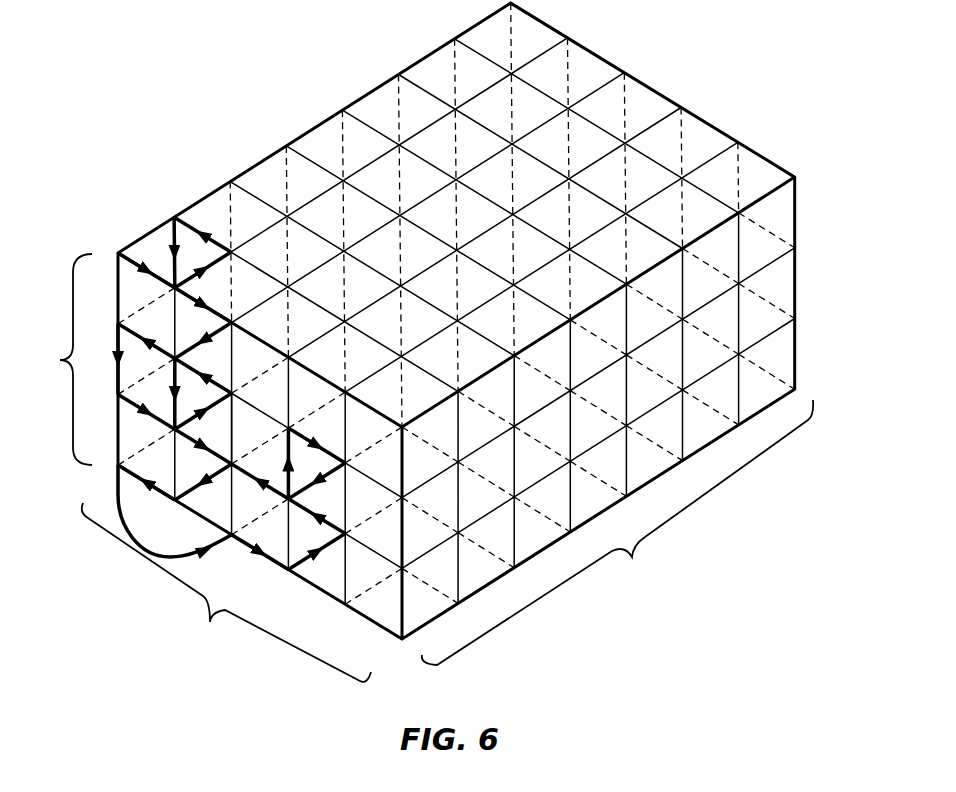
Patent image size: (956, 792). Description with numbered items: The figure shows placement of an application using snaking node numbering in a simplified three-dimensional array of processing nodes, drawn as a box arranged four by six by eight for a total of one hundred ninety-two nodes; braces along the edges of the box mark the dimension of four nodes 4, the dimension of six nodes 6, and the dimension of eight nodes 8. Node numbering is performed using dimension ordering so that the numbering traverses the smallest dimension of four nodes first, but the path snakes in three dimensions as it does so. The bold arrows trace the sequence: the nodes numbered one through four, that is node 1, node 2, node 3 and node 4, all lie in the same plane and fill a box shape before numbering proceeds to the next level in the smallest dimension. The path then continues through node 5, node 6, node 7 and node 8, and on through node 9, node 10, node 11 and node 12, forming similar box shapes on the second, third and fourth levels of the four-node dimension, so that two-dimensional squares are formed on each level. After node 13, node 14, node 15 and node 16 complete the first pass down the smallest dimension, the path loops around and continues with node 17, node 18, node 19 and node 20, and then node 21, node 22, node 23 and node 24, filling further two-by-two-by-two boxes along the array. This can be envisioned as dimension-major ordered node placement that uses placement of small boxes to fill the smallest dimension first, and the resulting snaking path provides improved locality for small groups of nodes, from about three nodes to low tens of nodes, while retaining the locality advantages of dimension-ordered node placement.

The node number one 1 is at (137, 264).
The node number two 2 is at (186, 277).
The node number three 3 is at (209, 234).
The node number four 4 is at (110, 326).
The node number five 5 is at (203, 306).
The node number six 6 is at (226, 485).
The node number seven 7 is at (151, 341).
The node number eight 8 is at (456, 488).
The node number nine 9 is at (137, 405).
The node number ten 10 is at (160, 415).
The node number eleven 11 is at (226, 404).
The node number twelve 12 is at (203, 369).
The node number thirteen 13 is at (203, 449).
The node number fourteen 14 is at (247, 428).
The node number fifteen 15 is at (150, 495).
The node number sixteen 16 is at (159, 504).
The node number seventeen 17 is at (255, 552).
The node number eighteen 18 is at (308, 564).
The node number nineteen 19 is at (340, 521).
The node number twenty 20 is at (286, 481).
The node number twenty-one 21 is at (316, 439).
The node number twenty-two 22 is at (340, 474).
The node number twenty-three 23 is at (260, 474).
The node number twenty-four 24 is at (210, 482).